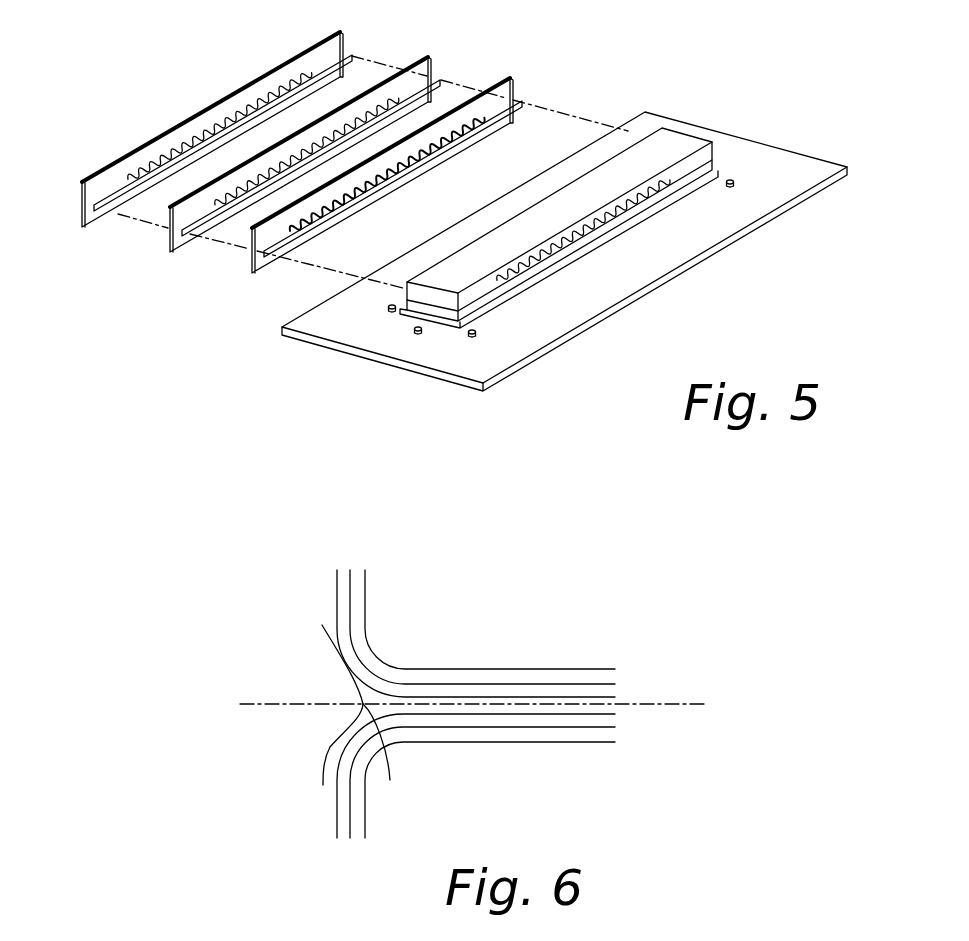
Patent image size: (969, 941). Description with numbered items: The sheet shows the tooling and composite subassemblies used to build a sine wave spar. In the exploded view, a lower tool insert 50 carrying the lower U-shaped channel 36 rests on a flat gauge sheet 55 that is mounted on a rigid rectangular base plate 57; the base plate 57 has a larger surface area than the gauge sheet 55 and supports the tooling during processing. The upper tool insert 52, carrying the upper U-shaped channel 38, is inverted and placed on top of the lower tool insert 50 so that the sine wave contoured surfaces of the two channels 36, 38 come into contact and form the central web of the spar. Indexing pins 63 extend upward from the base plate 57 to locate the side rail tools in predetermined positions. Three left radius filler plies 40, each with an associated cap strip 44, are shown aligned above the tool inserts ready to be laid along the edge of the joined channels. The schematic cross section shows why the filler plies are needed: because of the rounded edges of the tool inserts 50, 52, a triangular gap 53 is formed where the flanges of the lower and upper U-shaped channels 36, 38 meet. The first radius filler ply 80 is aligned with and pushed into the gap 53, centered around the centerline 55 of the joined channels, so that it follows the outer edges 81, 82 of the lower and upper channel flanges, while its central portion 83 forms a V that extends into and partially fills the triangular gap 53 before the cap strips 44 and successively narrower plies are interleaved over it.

In FIG. 5, the left radius filler plies 40 is at (348, 57).
In FIG. 5, the left cap strips 44 is at (84, 207).
In FIG. 5, the lower tool insert 50 is at (413, 311).
In FIG. 5, the upper tool insert 52 is at (672, 150).
In FIG. 5, the base plate 57 is at (338, 330).
In FIG. 5, the indexing pins 63 is at (477, 334).
In FIG. 6, the lower U-shaped channel 36 is at (422, 745).
In FIG. 6, the upper U-shaped channel 38 is at (483, 667).
In FIG. 6, the triangular gap 53 is at (363, 690).
In FIG. 6, the gauge sheet / centerline 55 is at (650, 705).
In FIG. 6, the first radius filler ply 80 is at (323, 771).
In FIG. 6, the outer edge of lower channel flange 81 is at (336, 818).
In FIG. 6, the outer edge of upper channel flange 82 is at (335, 597).
In FIG. 6, the central portion of first radius filler ply 83 is at (390, 780).